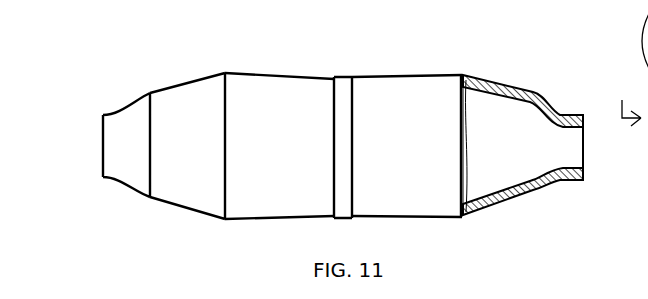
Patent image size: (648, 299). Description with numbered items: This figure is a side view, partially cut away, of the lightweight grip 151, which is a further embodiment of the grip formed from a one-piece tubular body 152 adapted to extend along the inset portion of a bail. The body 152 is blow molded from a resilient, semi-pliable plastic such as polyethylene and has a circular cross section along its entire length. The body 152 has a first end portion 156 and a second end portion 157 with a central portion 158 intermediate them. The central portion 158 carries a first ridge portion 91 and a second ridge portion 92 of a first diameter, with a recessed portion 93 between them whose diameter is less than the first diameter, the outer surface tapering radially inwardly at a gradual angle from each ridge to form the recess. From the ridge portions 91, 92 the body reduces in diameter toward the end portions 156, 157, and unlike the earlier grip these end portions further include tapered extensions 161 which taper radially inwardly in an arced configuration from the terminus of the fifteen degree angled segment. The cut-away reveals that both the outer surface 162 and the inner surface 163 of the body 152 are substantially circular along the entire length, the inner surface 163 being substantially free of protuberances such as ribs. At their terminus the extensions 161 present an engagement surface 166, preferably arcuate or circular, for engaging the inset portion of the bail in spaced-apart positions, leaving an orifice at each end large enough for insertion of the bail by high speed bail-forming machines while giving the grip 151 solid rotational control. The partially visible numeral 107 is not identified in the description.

The first ridge portion 91 is at (457, 220).
The second ridge portion 92 is at (220, 220).
The recessed portion 93 is at (318, 77).
The connector 107 is at (417, 0).
The grip 151 is at (363, 144).
The tubular body 152 is at (422, 72).
The first end portion 156 is at (500, 217).
The second end portion 157 is at (182, 212).
The central portion 158 is at (313, 217).
The tapered extensions 161 is at (125, 120).
The outer surface 162 is at (515, 85).
The inner surface 163 is at (508, 190).
The engagement surface 166 is at (573, 127).